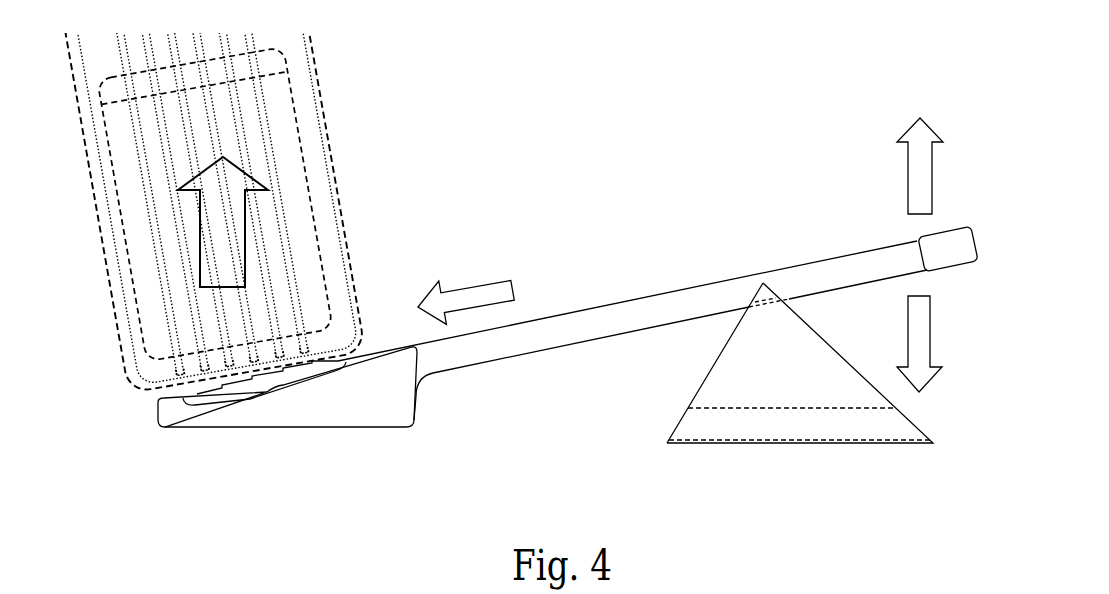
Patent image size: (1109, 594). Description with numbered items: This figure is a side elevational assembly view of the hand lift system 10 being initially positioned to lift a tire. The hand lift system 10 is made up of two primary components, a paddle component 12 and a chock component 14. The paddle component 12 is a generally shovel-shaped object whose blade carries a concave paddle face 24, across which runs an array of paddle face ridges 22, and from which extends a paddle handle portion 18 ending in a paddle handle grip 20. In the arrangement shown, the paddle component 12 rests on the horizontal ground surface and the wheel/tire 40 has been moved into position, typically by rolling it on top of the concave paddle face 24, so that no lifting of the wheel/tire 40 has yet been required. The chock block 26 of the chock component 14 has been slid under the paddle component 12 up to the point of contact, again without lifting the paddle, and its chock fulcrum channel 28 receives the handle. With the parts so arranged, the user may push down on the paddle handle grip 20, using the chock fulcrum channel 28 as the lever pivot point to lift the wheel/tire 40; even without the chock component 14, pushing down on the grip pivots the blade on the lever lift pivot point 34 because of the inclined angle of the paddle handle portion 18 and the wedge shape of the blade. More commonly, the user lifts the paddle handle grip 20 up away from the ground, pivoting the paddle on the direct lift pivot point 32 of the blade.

The hand lift system 10 is at (574, 303).
The paddle component 12 is at (664, 309).
The chock component 14 is at (795, 383).
The paddle handle portion 18 is at (555, 315).
The paddle handle grip 20 is at (967, 265).
The paddle face ridges 22 is at (267, 392).
The concave paddle face 24 is at (301, 314).
The chock block 26 is at (717, 360).
The chock fulcrum channel 28 is at (810, 319).
The direct lift pivot point 32 is at (337, 361).
The lever lift pivot point 34 is at (341, 404).
The wheel/tire 40 is at (241, 196).